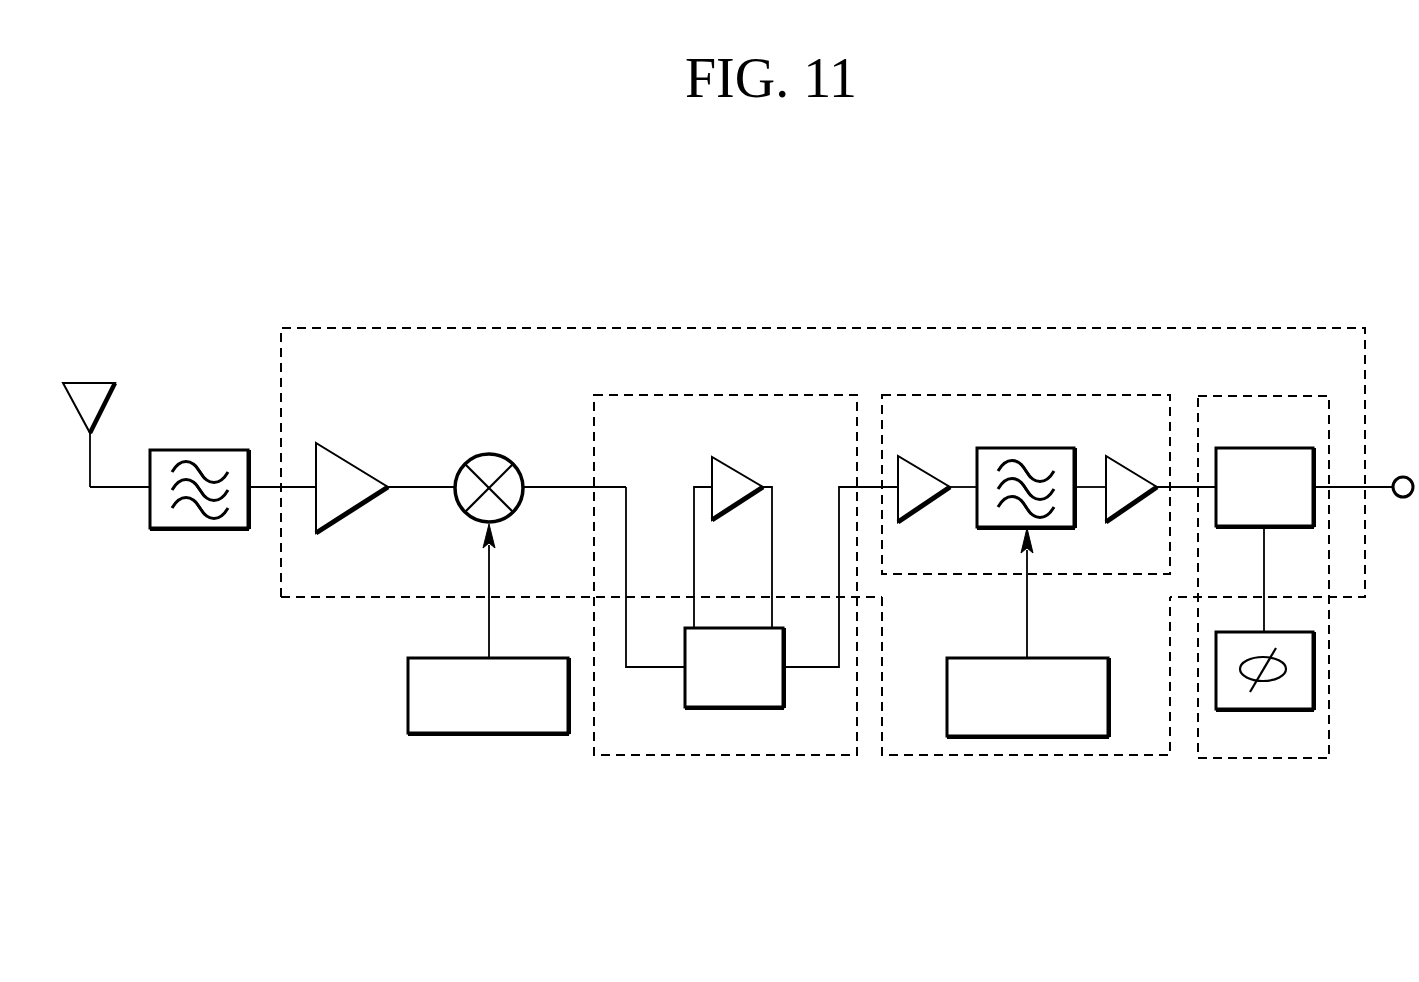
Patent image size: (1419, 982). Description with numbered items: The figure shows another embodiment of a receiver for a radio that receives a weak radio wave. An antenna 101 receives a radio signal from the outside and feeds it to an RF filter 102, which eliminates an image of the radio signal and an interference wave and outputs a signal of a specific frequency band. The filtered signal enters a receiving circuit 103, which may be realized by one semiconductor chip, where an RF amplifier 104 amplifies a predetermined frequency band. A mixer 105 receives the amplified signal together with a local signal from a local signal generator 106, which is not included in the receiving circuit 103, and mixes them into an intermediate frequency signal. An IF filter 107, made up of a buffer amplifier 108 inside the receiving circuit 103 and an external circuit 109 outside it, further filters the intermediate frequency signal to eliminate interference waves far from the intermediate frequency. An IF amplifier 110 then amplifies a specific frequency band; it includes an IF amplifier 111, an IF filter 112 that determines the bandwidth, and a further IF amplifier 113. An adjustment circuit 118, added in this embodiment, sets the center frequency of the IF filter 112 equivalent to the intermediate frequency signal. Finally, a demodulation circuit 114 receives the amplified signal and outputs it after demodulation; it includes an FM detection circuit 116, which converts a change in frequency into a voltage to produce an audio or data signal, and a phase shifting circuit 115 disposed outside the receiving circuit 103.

The antenna 101 is at (106, 384).
The RF filter 102 is at (200, 530).
The receiving circuit 103 is at (644, 328).
The RF amplifier 104 is at (338, 456).
The mixer 105 is at (488, 454).
The local signal generator 106 is at (408, 694).
The IF filter 107 is at (716, 396).
The buffer amplifier 108 is at (742, 471).
The external circuit 109 is at (726, 708).
The IF amplifier 110 is at (1016, 396).
The IF amplifier 111 is at (930, 470).
The IF filter 112 is at (1028, 450).
The IF amplifier 113 is at (1132, 518).
The demodulation circuit 114 is at (1264, 398).
The phase shifting circuit 115 is at (1276, 710).
The FM detection circuit 116 is at (1248, 448).
The adjustment circuit 118 is at (1074, 658).